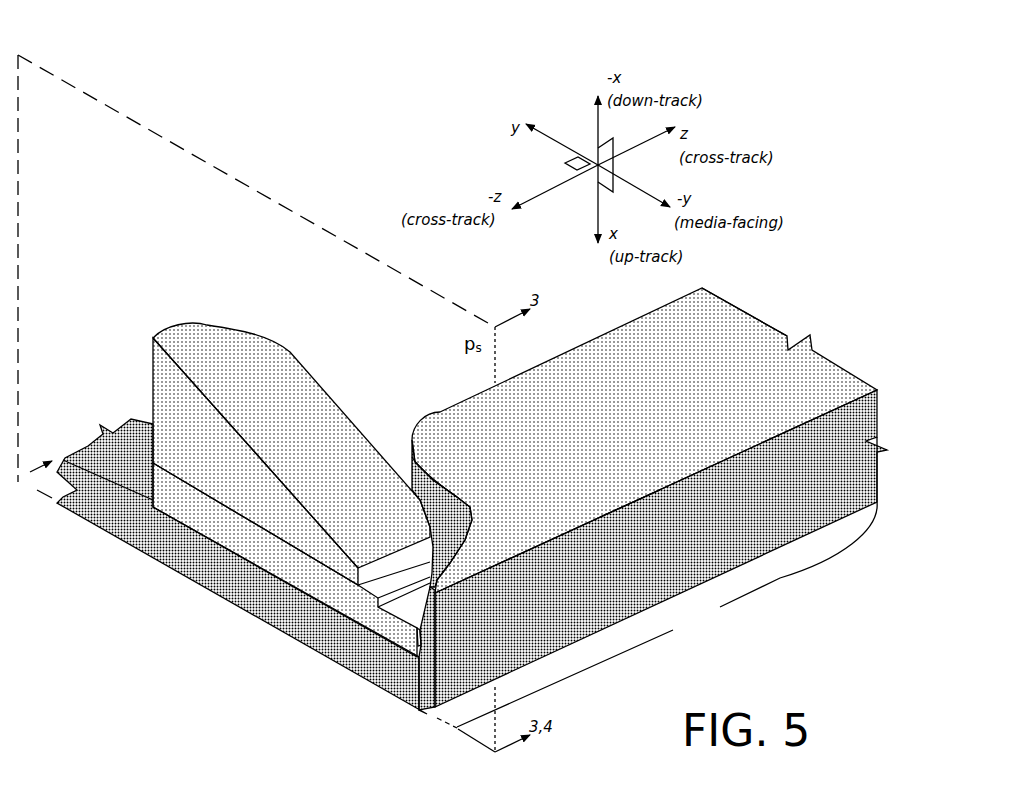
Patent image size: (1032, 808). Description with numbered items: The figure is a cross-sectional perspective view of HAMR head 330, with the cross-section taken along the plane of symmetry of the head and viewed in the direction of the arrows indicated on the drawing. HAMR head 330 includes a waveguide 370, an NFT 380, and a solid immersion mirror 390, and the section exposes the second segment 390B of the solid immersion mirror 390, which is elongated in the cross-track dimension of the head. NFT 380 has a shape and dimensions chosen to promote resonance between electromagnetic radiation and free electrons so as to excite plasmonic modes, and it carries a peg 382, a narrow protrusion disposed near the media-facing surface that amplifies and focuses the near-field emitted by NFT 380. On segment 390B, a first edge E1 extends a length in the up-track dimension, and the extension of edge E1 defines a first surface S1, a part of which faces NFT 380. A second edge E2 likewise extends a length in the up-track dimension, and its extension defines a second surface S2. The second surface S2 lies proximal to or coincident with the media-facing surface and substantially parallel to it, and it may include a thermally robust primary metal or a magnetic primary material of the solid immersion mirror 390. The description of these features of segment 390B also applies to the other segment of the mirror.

The HAMR head 330 is at (266, 120).
The waveguide 370 is at (122, 517).
The NFT 380 is at (141, 462).
The peg 382 is at (408, 638).
The solid immersion mirror 390 is at (653, 507).
The second segment of solid immersion mirror 390B is at (765, 312).
The first surface S1 is at (421, 482).
The second surface S2 is at (815, 472).
The first edge E1 is at (428, 473).
The second edge E2 is at (627, 508).